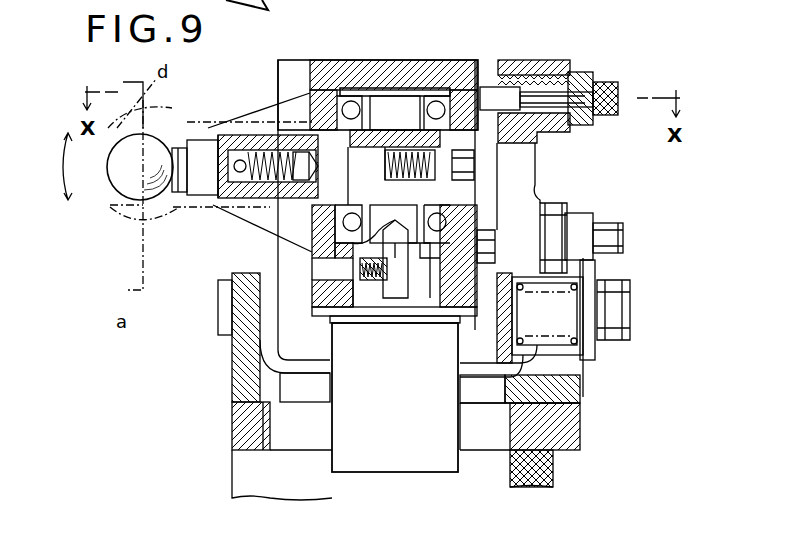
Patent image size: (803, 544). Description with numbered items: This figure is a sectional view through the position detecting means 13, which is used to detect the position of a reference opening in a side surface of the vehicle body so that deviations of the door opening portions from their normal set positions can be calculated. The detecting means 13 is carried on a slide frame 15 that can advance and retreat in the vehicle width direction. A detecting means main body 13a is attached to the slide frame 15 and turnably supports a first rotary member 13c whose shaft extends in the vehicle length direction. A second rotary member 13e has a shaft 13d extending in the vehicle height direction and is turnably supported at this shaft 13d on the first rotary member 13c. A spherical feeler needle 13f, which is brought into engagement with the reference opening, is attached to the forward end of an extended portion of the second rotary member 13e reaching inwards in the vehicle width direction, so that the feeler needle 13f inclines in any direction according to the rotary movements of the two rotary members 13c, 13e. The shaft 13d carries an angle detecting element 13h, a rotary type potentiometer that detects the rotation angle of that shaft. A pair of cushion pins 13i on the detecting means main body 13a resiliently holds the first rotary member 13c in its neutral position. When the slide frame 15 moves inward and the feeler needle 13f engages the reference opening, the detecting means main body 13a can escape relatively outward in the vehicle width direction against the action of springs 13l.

The position detecting means 13 is at (199, 228).
The detecting means main body 13a is at (530, 163).
The first rotary member 13c is at (455, 82).
The shaft 13d is at (395, 107).
The second rotary member 13e is at (352, 100).
The spherical feeler needle 13f is at (157, 130).
The angle detecting element 13h is at (398, 460).
The cushion pins 13i is at (532, 44).
The springs 13l is at (577, 345).
The slide frame 15 is at (233, 422).